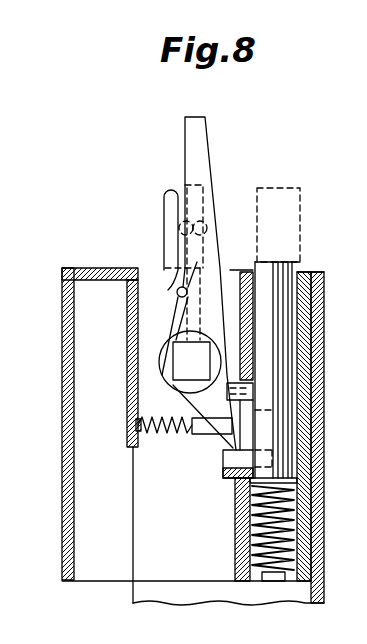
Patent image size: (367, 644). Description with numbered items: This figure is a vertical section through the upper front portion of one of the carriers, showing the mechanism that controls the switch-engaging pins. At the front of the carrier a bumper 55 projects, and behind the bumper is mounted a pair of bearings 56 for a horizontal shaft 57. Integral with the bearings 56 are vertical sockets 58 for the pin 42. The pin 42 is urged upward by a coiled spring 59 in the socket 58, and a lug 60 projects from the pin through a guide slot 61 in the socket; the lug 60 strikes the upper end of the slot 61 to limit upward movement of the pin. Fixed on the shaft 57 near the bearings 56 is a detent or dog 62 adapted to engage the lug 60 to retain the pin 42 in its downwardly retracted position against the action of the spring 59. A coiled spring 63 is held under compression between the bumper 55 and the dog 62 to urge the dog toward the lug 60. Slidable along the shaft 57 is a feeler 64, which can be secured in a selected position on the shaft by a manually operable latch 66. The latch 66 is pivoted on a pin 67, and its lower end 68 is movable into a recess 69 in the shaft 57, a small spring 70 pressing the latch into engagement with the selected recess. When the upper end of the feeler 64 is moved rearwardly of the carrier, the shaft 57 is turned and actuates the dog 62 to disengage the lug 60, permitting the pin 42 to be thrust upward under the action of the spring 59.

The pin 42 is at (265, 280).
The bumper 55 is at (67, 456).
The bearings 56 is at (230, 278).
The horizontal shaft 57 is at (197, 370).
The vertical socket 58 is at (305, 278).
The coiled spring 59 is at (260, 518).
The lug 60 is at (222, 462).
The guide slot 61 is at (297, 433).
The detent or dog 62 is at (215, 432).
The coiled spring 63 is at (170, 417).
The feeler 64 is at (196, 144).
The manually operable latch 66 is at (170, 197).
The pin 67 is at (170, 275).
The lower end of latch 68 is at (160, 355).
The recess 69 is at (180, 320).
The small spring 70 is at (193, 212).